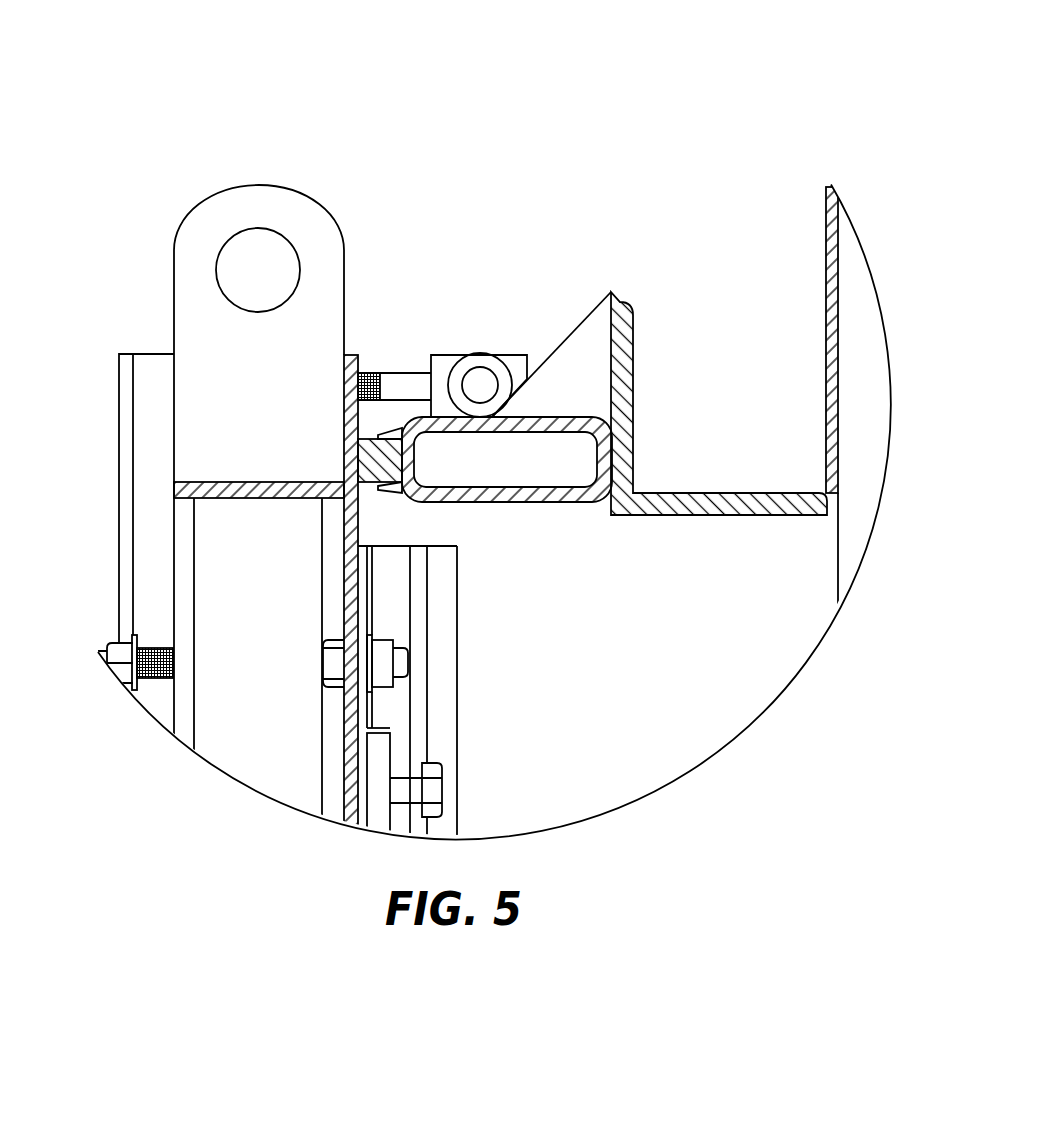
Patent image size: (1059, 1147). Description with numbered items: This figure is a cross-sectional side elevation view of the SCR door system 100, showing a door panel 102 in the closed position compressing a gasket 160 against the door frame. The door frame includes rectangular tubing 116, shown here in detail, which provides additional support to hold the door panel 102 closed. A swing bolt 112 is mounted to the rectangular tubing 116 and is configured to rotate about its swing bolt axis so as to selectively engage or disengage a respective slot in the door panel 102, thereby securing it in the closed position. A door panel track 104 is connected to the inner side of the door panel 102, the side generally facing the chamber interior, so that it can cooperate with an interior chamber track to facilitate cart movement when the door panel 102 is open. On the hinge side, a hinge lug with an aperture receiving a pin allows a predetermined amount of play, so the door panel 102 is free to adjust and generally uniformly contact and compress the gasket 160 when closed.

The door system 100 is at (568, 115).
The door panel 102 is at (345, 522).
The door panel track 104 is at (457, 703).
The swing bolt 112 is at (443, 353).
The rectangular tubing 116 is at (528, 507).
The gasket 160 is at (377, 483).